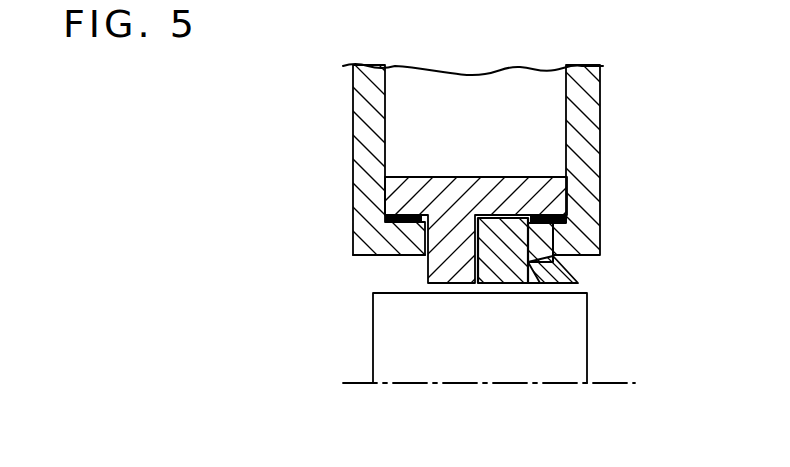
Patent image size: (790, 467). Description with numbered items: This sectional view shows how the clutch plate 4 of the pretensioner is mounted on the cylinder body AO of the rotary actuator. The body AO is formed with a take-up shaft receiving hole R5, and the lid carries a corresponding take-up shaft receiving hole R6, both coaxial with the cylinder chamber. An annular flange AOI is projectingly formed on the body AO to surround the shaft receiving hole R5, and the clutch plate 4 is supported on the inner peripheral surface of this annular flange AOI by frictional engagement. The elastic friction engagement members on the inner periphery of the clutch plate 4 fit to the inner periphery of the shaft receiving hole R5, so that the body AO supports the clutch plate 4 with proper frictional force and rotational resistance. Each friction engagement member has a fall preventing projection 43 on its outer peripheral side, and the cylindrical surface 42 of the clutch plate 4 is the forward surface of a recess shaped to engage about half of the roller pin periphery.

The body AO is at (596, 135).
The annular flange AOI is at (560, 233).
The clutch plate 4 is at (514, 257).
The cylindrical surface 42 is at (547, 284).
The fall preventing projection 43 is at (553, 257).
The take-up shaft receiving hole R5 is at (537, 284).
The take-up shaft receiving hole R6 is at (378, 255).